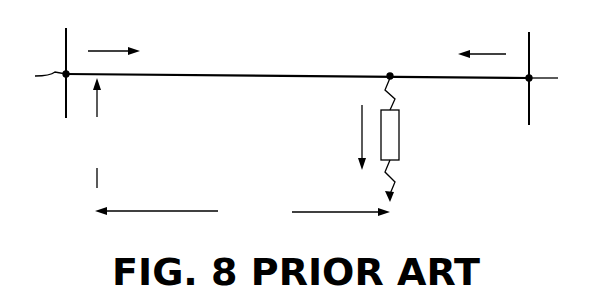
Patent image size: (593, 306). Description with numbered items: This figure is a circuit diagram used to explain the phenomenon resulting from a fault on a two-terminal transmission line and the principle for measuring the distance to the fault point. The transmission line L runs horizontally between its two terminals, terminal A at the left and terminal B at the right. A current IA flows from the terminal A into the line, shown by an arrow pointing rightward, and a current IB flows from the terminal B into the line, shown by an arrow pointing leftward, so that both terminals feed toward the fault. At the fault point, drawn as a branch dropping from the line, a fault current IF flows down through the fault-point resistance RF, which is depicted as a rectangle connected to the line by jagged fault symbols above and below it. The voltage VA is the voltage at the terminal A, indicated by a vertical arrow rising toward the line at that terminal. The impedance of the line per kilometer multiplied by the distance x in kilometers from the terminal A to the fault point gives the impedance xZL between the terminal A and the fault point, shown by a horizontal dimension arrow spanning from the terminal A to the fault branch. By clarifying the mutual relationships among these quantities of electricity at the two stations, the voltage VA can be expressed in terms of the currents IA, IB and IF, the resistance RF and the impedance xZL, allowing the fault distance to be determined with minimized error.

The terminal A is at (44, 73).
The terminal B is at (550, 78).
The transmission line L is at (247, 74).
The current at terminal A IA is at (114, 31).
The current at terminal B IB is at (482, 35).
The fault current IF is at (349, 137).
The voltage at terminal A VA is at (98, 133).
The fault-point resistance RF is at (409, 137).
The impedance between terminal A and fault point xZL is at (242, 210).